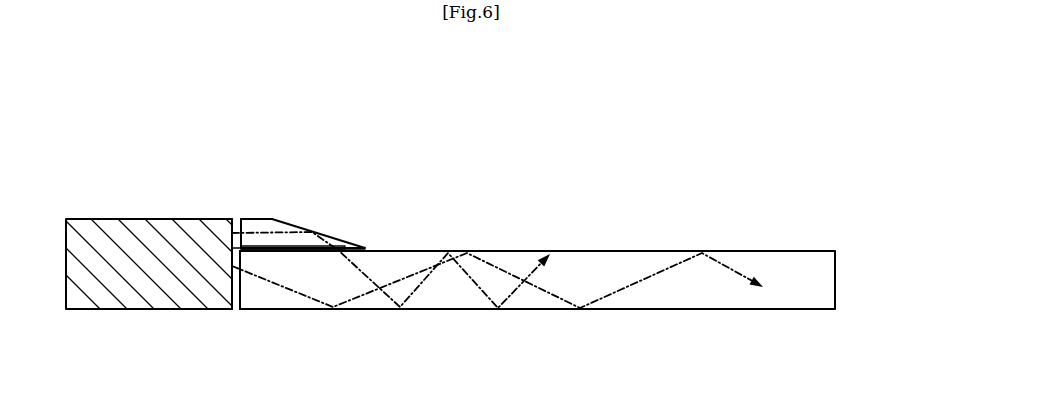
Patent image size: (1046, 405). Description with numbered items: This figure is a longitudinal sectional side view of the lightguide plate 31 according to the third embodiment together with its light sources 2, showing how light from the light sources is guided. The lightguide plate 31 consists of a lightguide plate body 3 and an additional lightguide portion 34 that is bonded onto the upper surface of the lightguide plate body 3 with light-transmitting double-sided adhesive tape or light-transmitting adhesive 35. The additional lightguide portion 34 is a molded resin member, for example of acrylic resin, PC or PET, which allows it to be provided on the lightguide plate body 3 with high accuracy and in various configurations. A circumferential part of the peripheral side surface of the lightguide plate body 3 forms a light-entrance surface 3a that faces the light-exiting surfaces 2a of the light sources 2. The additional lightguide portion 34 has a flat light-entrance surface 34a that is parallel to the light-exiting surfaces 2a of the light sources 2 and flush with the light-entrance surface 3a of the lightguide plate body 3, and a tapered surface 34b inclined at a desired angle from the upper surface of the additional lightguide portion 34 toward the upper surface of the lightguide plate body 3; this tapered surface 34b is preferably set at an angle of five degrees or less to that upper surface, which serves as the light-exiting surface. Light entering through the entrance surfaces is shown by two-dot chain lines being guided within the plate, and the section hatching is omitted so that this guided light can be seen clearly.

The light source 2 is at (137, 219).
The light-exiting surface of light source 2a is at (241, 264).
The lightguide plate body 3 is at (607, 309).
The light-entrance surface 3a is at (234, 296).
The lightguide plate 31 is at (744, 136).
The additional lightguide portion 34 is at (283, 216).
The light-entrance surface of additional lightguide portion 34a is at (230, 220).
The tapered surface 34b is at (327, 236).
The light-transmitting adhesive 35 is at (323, 250).